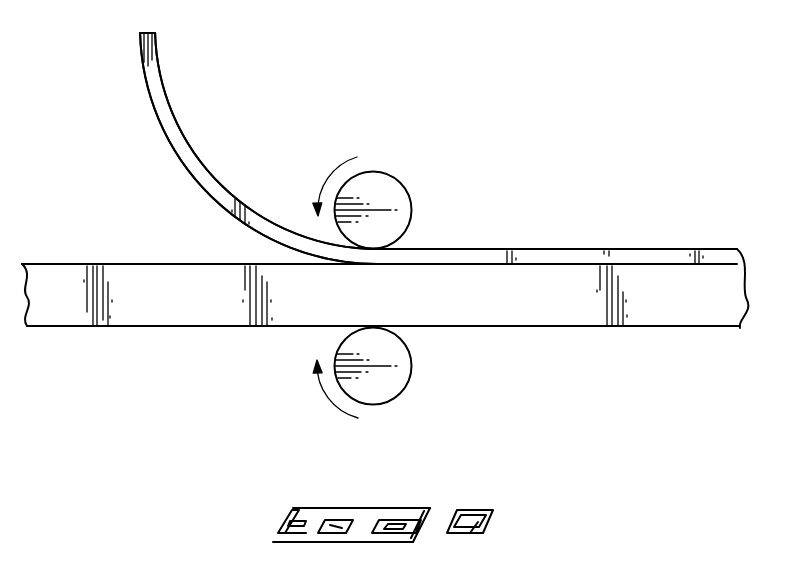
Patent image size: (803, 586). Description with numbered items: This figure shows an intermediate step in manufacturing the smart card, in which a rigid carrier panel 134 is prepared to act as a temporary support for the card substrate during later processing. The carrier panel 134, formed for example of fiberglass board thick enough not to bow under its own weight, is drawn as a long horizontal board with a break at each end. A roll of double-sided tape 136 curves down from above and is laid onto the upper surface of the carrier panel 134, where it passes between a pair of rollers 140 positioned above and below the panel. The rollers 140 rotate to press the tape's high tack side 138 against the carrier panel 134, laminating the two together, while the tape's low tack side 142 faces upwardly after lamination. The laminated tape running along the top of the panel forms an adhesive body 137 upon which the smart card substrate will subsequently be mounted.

The carrier panel 134 is at (157, 327).
The double-sided tape 136 is at (171, 104).
The adhesive body 137 is at (598, 232).
The high tack side 138 is at (176, 162).
The rollers 140 is at (413, 162).
The low tack side 142 is at (213, 173).